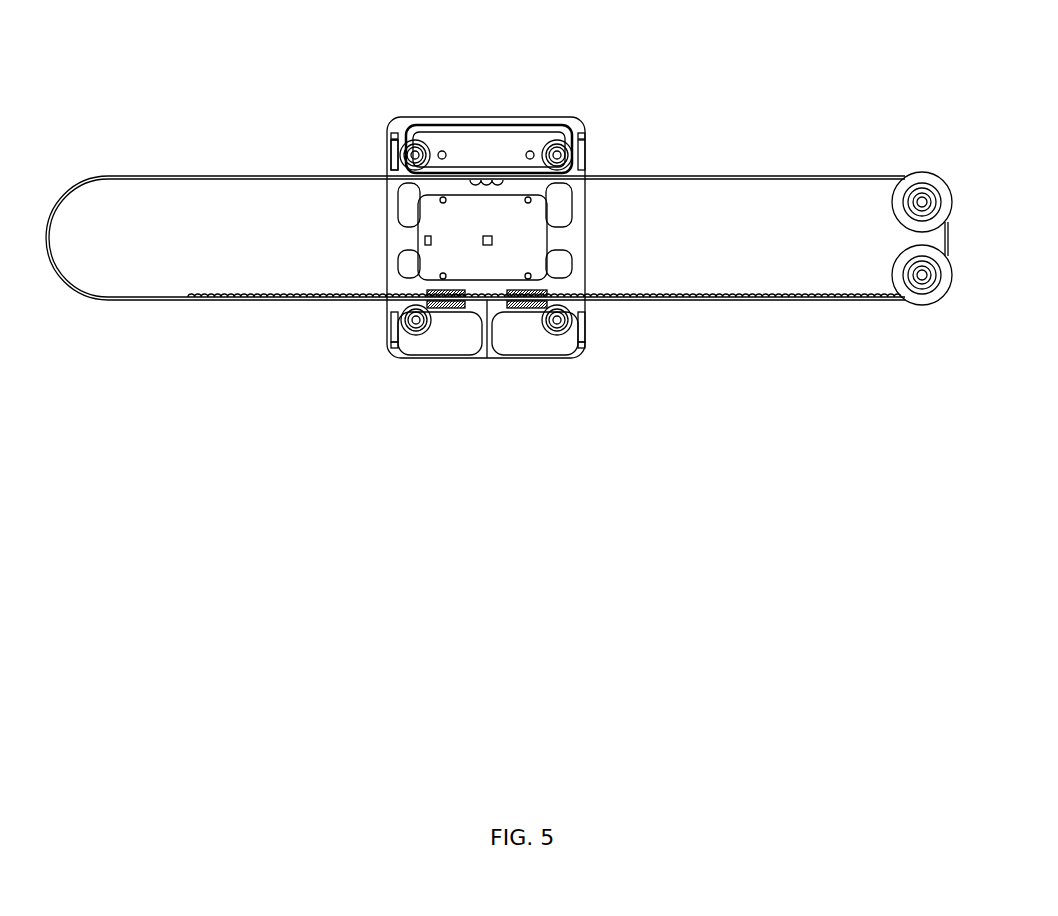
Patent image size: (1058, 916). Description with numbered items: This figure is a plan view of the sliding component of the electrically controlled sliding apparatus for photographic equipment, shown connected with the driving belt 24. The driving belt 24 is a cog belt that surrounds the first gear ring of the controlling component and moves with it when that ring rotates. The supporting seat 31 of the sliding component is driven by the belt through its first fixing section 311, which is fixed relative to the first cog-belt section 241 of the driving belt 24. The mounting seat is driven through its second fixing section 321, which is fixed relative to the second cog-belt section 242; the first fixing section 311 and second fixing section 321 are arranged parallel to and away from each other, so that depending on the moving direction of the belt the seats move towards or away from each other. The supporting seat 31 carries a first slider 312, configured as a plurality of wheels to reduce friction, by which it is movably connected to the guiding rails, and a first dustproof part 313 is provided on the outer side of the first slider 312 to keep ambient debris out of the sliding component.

The driving belt 24 is at (195, 176).
The first cog-belt section 241 is at (273, 298).
The second cog-belt section 242 is at (490, 190).
The supporting seat 31 is at (367, 325).
The first fixing section 311 is at (487, 358).
The first slider 312 is at (404, 142).
The first dustproof part 313 is at (392, 158).
The second fixing section 321 is at (485, 188).